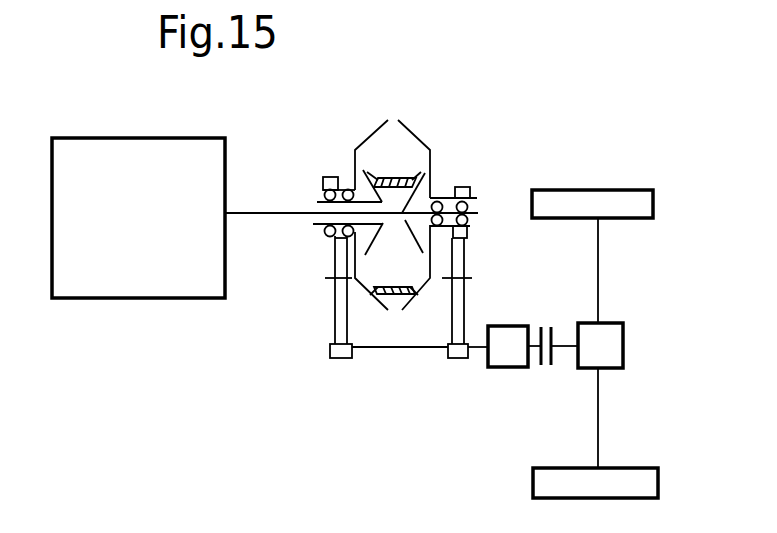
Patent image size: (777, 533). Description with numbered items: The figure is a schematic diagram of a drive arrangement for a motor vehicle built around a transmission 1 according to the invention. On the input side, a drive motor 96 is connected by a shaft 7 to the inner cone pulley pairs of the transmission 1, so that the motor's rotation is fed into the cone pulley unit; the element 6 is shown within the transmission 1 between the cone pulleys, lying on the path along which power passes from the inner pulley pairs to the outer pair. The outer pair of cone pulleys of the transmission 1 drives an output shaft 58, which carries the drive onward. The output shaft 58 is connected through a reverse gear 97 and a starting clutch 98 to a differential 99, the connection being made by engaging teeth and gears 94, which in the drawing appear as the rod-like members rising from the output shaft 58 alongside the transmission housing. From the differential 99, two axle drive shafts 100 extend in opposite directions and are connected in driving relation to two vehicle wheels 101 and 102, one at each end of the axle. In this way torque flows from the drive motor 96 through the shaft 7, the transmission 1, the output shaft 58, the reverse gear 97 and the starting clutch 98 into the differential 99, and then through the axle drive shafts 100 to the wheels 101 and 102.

The drive motor 96 is at (138, 203).
The shaft 7 is at (272, 213).
The transmission 1 is at (438, 128).
The rollers 6 is at (397, 178).
The engaging teeth and gears 94 is at (333, 330).
The output shaft 58 is at (395, 347).
The reverse gear 97 is at (490, 368).
The starting clutch 98 is at (540, 390).
The differential 99 is at (623, 333).
The axle drive shafts 100 is at (600, 390).
The vehicle wheel 101 is at (568, 190).
The vehicle wheel 102 is at (617, 468).